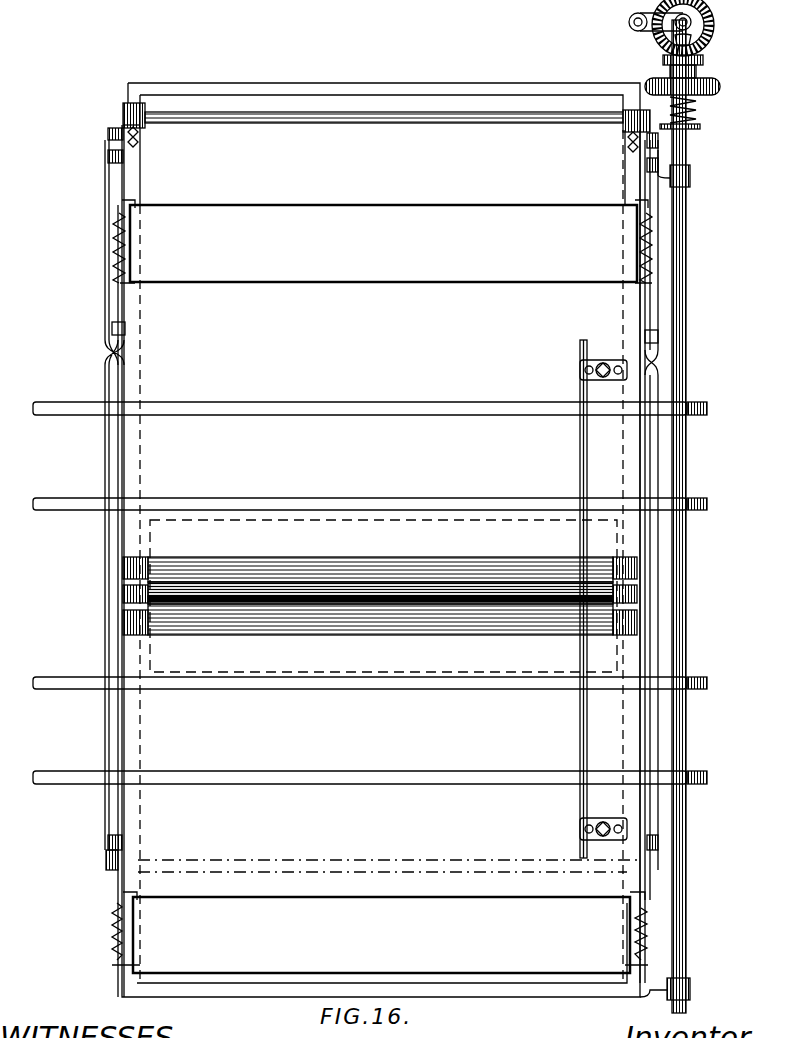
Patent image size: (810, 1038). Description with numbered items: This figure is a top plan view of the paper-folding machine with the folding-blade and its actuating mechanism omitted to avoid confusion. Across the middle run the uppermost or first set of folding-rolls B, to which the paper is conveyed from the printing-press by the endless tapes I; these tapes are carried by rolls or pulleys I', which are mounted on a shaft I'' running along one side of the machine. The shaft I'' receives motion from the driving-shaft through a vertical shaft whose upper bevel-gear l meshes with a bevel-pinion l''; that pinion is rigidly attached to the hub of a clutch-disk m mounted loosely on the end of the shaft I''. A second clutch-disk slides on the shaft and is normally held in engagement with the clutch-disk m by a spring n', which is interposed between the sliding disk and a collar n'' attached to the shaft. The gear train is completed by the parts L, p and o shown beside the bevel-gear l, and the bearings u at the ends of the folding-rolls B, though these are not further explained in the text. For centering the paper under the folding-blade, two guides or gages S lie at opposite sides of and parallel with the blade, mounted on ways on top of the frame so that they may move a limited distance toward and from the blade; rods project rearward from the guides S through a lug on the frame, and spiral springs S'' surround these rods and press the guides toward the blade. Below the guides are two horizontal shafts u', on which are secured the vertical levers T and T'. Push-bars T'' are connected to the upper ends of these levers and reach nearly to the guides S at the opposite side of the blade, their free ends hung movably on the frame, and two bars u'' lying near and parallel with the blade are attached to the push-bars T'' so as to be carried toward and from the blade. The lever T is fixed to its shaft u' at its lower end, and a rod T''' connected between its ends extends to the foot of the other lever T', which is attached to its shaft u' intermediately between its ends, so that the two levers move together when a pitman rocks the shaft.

The crank handle L is at (630, 22).
The crank pin p is at (656, 22).
The hub o is at (686, 29).
The bevel-gear l is at (687, 28).
The bevel-pinion l'' is at (692, 65).
The clutch-disk m is at (691, 86).
The spring n' is at (693, 111).
The collar n'' is at (690, 127).
The vertical lever T is at (381, 550).
The vertical lever T' is at (399, 499).
The push-bar T'' is at (377, 520).
The rod T''' is at (99, 499).
The guide or gage S is at (382, 586).
The spiral spring S'' is at (378, 586).
The endless tape I is at (360, 595).
The roll or pulley I' is at (697, 583).
The shaft I'' is at (687, 516).
The folding-roll B is at (380, 596).
The bearing u is at (380, 594).
The horizontal shaft u' is at (386, 487).
The bar u'' is at (380, 599).